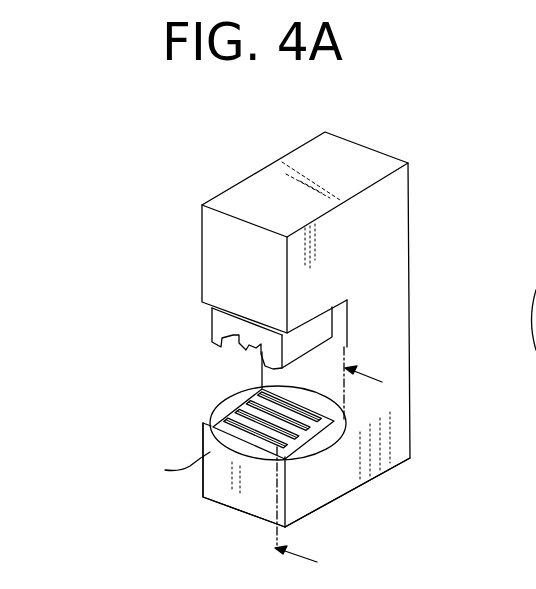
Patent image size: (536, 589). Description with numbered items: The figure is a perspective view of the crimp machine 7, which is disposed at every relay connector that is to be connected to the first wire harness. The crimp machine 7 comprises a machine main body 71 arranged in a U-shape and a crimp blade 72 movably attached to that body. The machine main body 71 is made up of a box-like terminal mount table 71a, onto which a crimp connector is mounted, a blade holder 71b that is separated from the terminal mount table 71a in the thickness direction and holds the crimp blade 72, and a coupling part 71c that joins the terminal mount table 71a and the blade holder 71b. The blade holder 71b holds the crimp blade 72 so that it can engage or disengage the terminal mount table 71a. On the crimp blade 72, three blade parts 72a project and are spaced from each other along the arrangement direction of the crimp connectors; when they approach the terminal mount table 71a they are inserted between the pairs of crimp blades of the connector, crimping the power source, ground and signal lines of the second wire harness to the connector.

The crimp machine 7 is at (410, 232).
The machine main body 71 is at (78, 263).
The terminal mount table 71a is at (202, 440).
The blade holder 71b is at (213, 253).
The coupling part 71c is at (266, 376).
The crimp blade 72 is at (323, 343).
The blade parts 72a is at (273, 333).